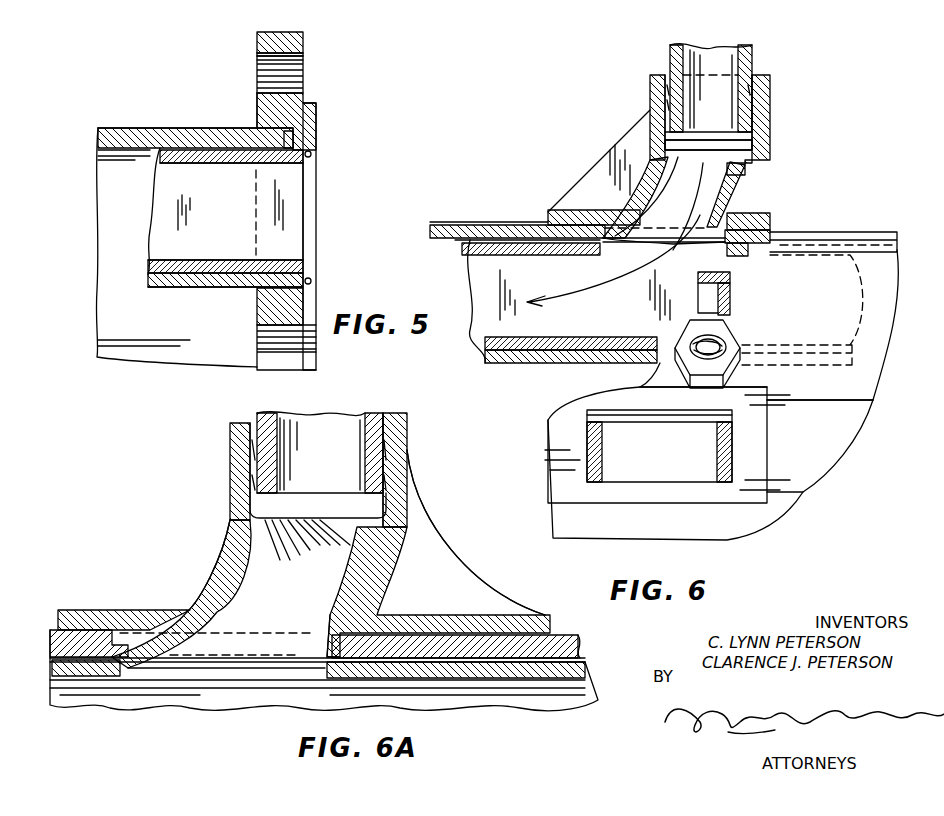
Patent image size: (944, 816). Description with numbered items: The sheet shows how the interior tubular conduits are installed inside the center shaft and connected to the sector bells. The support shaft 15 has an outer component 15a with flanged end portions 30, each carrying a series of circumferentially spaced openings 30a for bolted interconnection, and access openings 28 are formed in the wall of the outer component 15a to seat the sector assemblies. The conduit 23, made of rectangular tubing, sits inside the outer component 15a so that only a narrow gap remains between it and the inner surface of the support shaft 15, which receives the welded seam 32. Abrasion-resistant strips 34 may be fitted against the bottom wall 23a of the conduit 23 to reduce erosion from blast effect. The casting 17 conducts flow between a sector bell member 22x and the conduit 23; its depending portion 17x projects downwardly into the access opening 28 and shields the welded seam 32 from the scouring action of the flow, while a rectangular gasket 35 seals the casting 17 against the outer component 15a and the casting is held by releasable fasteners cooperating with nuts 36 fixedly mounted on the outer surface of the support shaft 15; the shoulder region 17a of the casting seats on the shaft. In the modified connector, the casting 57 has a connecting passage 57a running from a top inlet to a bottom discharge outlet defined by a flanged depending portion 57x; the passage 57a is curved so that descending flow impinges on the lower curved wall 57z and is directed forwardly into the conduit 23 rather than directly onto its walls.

In FIG. 6, the support shaft 15 is at (802, 295).
In FIG. 5, the outer component 15a is at (194, 128).
In FIG. 6, the casting 17 is at (770, 184).
In FIG. 6, the fitting shoulder 17a is at (678, 180).
In FIG. 6, the depending portion 17x is at (690, 240).
In FIG. 6, the sector bell member 22x is at (752, 60).
In FIG. 5, the conduit 23 is at (234, 193).
In FIG. 6, the conduit 23 is at (478, 255).
In FIG. 6A, the conduit 23 is at (88, 670).
In FIG. 5, the bottom wall 23a is at (230, 287).
In FIG. 5, the access opening 28 is at (316, 216).
In FIG. 6, the access opening 28 is at (770, 228).
In FIG. 5, the flanged end portion 30 is at (303, 32).
In FIG. 5, the opening 30a is at (303, 72).
In FIG. 6, the welded seam 32 is at (603, 244).
In FIG. 5, the abrasion-resistant strip 34 is at (212, 260).
In FIG. 6, the abrasion-resistant strip 34 is at (612, 337).
In FIG. 6, the rectangular gasket 35 is at (548, 212).
In FIG. 6, the nut 36 is at (742, 336).
In FIG. 6A, the casting 57 is at (378, 588).
In FIG. 6A, the connecting passage 57a is at (240, 592).
In FIG. 6A, the flanged depending portion 57x is at (314, 662).
In FIG. 6A, the lower curved wall 57z is at (365, 598).